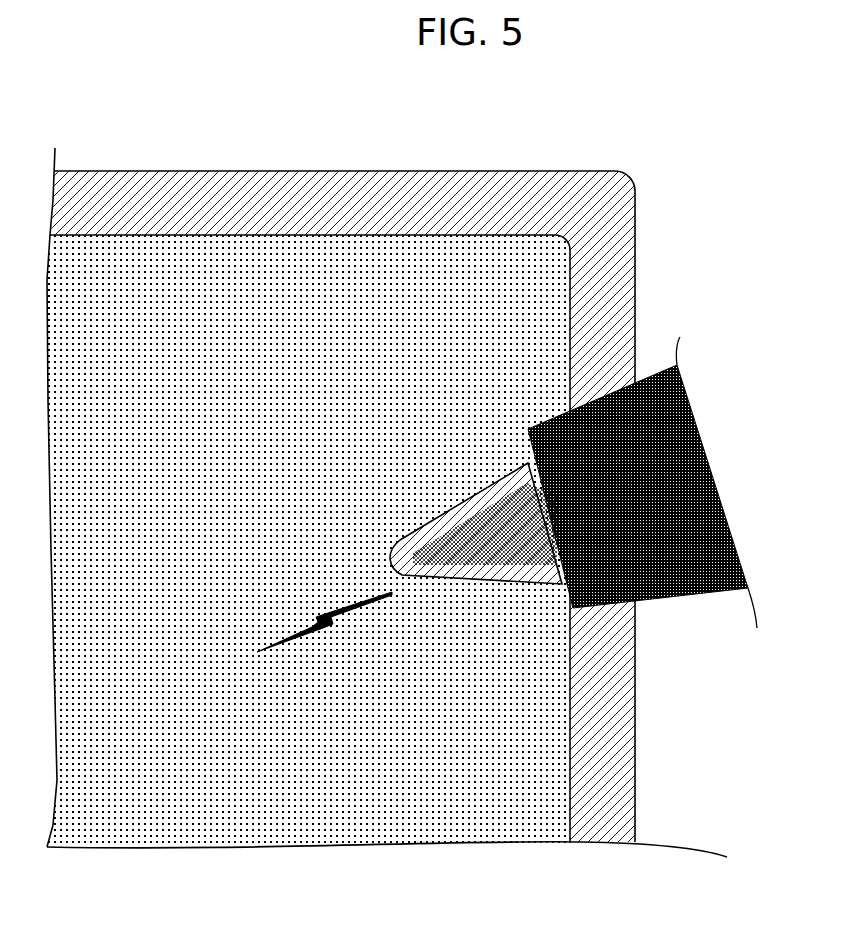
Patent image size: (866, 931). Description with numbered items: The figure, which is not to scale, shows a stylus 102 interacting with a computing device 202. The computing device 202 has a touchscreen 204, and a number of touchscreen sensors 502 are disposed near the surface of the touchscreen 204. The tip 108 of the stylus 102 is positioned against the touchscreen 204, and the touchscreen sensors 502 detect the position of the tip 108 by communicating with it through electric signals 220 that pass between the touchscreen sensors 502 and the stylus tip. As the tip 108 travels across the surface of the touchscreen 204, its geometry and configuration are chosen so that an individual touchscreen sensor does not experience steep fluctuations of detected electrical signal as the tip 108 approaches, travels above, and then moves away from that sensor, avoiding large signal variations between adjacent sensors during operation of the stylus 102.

The stylus 102 is at (739, 440).
The tip 108 is at (513, 585).
The computing device 202 is at (636, 238).
The touchscreen 204 is at (103, 267).
The electric signals 220 is at (295, 637).
The touchscreen sensors 502 is at (314, 318).